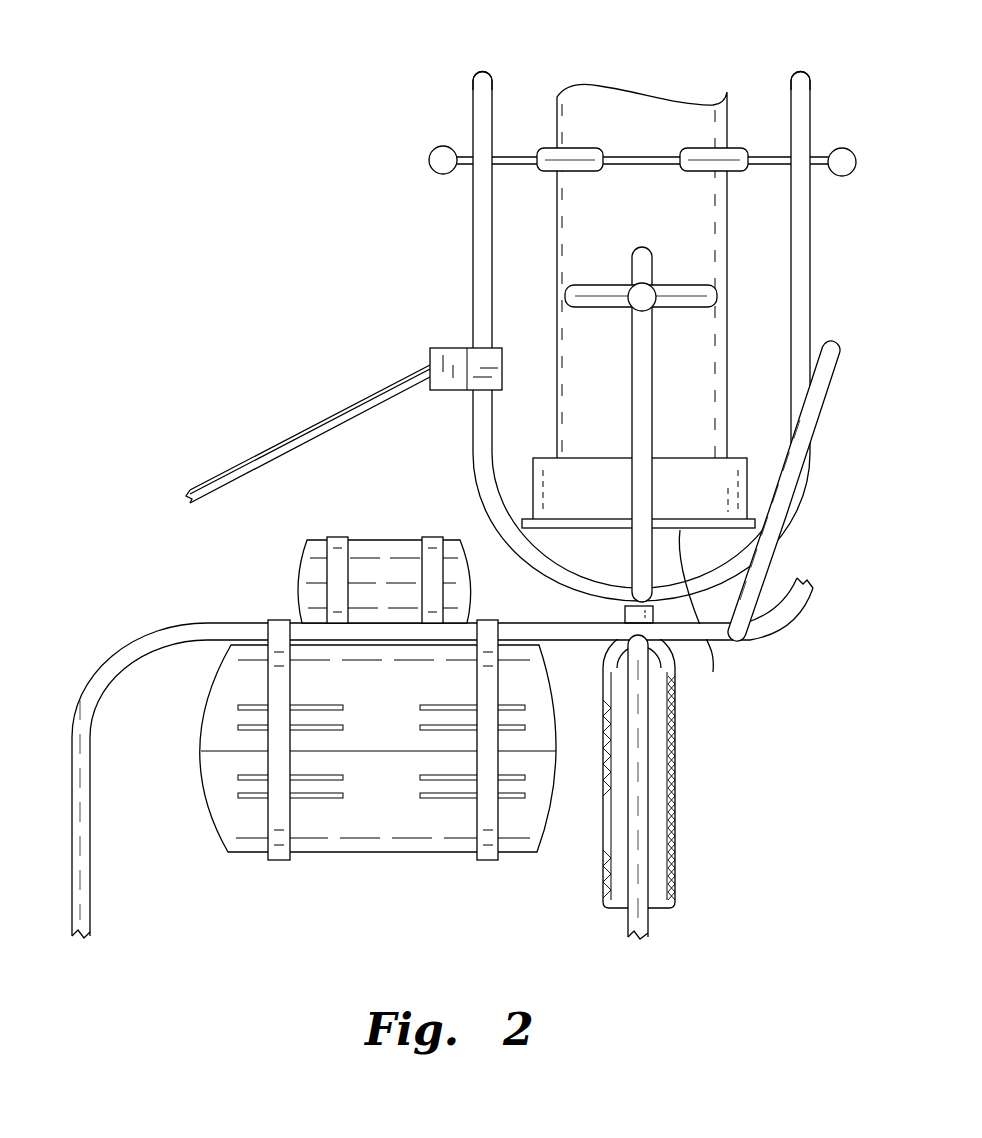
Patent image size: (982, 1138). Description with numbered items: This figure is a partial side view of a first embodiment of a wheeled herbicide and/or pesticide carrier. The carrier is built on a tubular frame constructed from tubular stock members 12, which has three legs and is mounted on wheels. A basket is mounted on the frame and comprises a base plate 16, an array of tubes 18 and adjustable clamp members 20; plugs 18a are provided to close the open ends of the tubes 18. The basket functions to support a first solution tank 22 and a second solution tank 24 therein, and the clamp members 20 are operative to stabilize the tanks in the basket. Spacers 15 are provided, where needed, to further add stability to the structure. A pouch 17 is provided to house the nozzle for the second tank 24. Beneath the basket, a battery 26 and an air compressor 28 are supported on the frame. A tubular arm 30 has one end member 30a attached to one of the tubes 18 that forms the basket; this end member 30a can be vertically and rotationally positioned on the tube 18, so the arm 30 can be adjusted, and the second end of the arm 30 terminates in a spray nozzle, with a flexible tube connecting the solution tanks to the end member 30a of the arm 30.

The tubular stock member 12 is at (818, 418).
The spacer 15 is at (623, 619).
The base plate 16 is at (701, 617).
The pouch 17 is at (675, 858).
The tube 18 is at (472, 270).
The plug 18a is at (480, 70).
The adjustable clamp member 20 is at (695, 288).
The first solution tank 22 is at (556, 330).
The second solution tank 24 is at (543, 457).
The battery 26 is at (301, 546).
The air compressor 28 is at (212, 824).
The tubular arm 30 is at (277, 440).
The end member 30a is at (440, 391).